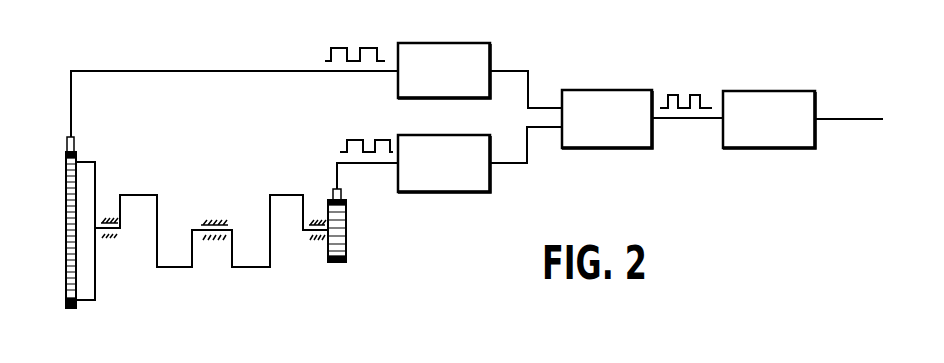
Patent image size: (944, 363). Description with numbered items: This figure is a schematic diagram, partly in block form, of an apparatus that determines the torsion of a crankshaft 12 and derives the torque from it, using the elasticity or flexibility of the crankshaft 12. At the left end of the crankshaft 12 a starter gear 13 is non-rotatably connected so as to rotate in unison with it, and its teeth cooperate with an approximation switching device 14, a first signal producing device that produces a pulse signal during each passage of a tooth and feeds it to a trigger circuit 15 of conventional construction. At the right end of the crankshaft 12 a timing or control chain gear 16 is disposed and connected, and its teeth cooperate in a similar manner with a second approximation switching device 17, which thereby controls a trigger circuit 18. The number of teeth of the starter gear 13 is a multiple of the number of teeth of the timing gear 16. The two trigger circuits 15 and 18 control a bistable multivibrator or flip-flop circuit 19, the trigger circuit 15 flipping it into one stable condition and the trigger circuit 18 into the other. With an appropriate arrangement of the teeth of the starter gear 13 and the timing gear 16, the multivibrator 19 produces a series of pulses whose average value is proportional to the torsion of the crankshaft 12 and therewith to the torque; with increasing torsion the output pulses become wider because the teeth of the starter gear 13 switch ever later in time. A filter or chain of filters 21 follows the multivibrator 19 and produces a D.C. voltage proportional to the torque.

The crankshaft 12 is at (158, 205).
The starter gear 13 is at (70, 312).
The approximation switching device 14 is at (75, 145).
The trigger circuit 15 is at (475, 43).
The timing or control chain gear 16 is at (347, 235).
The approximation switching device 17 is at (335, 193).
The trigger circuit 18 is at (478, 192).
The bistable multivibrator 19 is at (633, 90).
The filter 21 is at (785, 91).